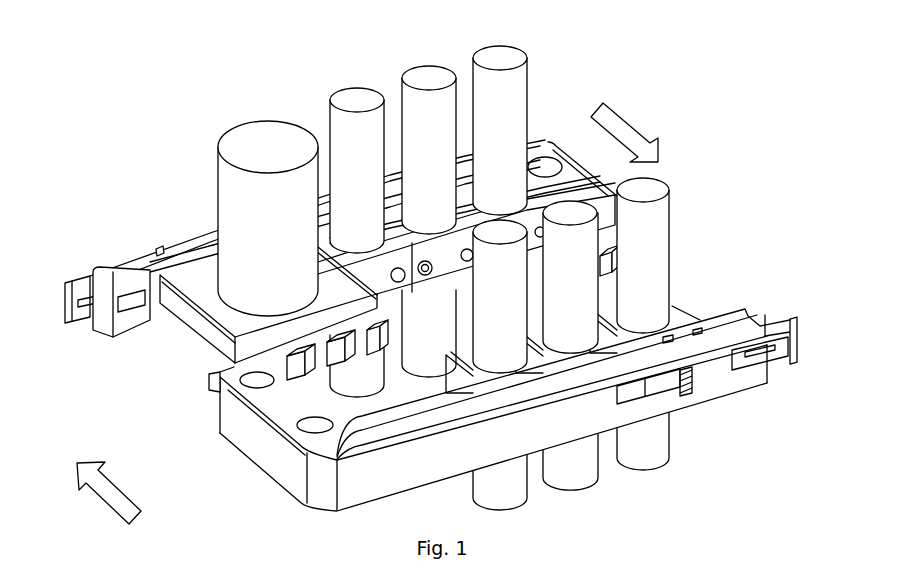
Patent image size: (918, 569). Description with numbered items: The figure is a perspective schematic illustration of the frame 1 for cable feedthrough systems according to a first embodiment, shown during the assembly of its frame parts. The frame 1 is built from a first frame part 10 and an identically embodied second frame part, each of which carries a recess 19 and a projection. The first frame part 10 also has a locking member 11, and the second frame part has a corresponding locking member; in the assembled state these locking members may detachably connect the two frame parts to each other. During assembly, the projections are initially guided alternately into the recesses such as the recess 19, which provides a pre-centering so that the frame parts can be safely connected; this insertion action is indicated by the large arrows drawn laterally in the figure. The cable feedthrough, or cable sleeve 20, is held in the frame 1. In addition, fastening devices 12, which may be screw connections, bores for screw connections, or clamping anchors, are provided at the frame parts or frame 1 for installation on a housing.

The frame 1 is at (427, 287).
The first frame part 10 is at (301, 282).
The locking member 11 is at (83, 318).
The fastening devices 12 is at (254, 387).
The recess 19 is at (137, 320).
The cable sleeve 20 is at (200, 287).